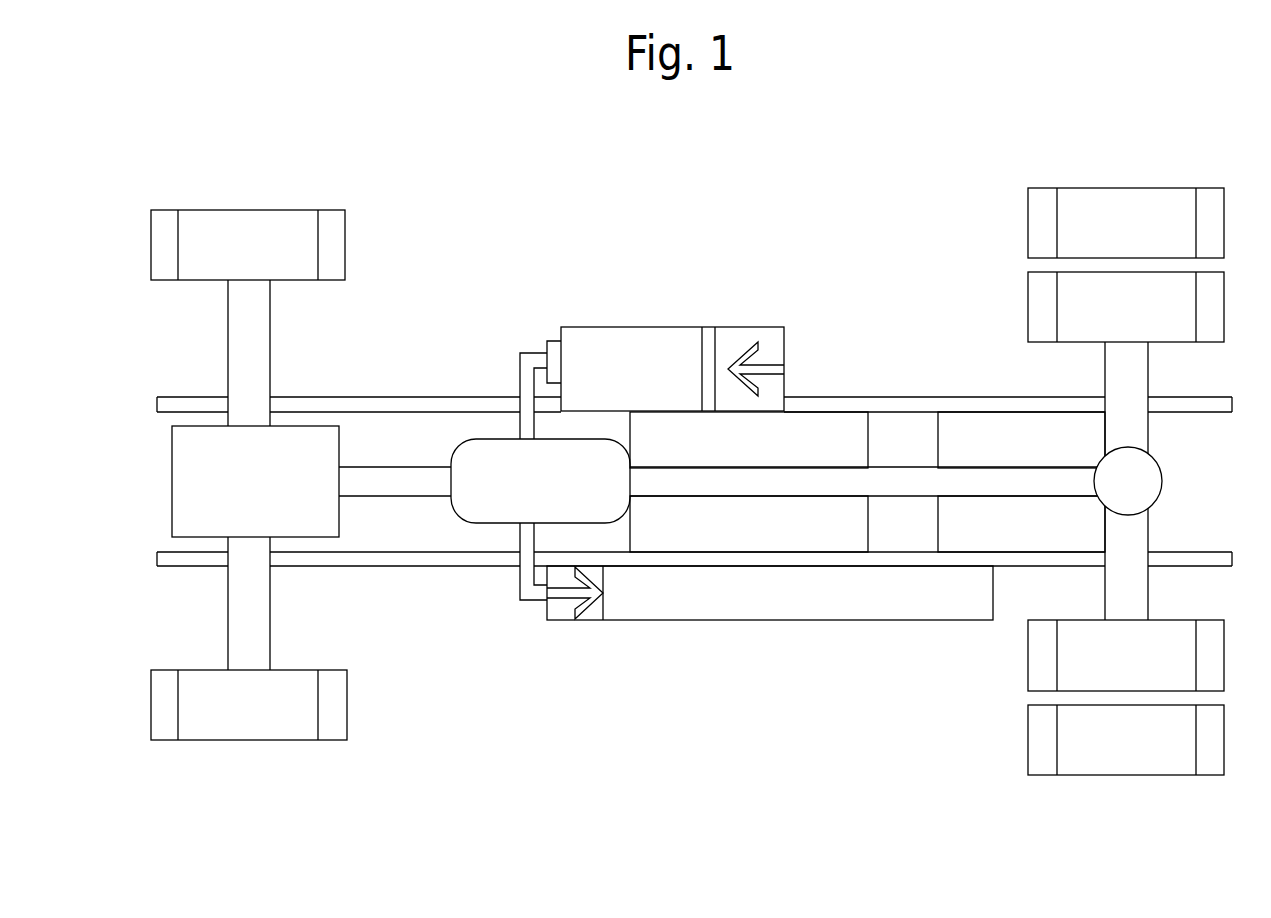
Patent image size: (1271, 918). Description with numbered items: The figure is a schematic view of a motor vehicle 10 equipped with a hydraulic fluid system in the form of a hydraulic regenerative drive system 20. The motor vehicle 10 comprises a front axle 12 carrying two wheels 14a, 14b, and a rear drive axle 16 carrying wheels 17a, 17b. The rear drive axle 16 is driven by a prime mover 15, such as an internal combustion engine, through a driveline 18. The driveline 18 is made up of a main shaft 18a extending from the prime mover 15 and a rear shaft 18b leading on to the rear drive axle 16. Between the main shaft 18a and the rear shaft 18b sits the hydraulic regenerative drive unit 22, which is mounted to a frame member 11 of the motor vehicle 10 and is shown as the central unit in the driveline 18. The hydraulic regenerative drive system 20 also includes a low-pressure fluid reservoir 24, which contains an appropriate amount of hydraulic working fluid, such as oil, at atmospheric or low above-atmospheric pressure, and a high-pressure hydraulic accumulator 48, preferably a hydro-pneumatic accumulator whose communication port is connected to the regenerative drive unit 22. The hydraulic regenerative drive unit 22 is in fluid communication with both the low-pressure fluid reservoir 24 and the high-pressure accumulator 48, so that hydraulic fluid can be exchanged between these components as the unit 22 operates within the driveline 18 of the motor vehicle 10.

The motor vehicle 10 is at (624, 786).
The frame member 11 is at (353, 397).
The front axle 12 is at (216, 627).
The wheel 14a is at (198, 740).
The wheel 14b is at (198, 210).
The prime mover 15 is at (172, 490).
The rear drive axle 16 is at (1165, 528).
The wheel 17a is at (1148, 775).
The wheel 17b is at (1173, 188).
The driveline 18 is at (826, 455).
The main shaft 18a is at (367, 496).
The rear shaft 18b is at (804, 497).
The hydraulic regenerative drive system 20 is at (496, 371).
The hydraulic regenerative drive unit 22 is at (473, 542).
The low-pressure fluid reservoir 24 is at (672, 327).
The high-pressure hydraulic accumulator 48 is at (723, 622).